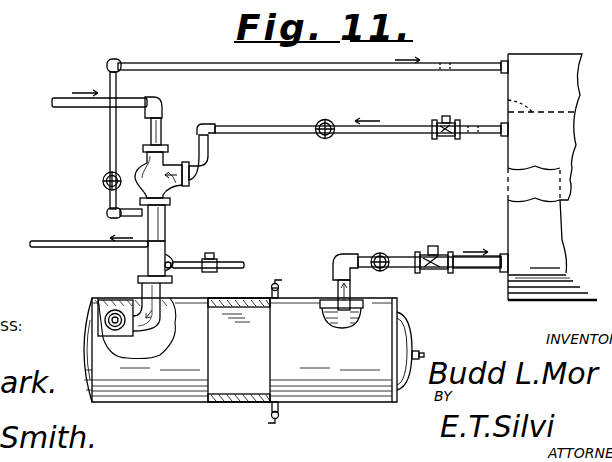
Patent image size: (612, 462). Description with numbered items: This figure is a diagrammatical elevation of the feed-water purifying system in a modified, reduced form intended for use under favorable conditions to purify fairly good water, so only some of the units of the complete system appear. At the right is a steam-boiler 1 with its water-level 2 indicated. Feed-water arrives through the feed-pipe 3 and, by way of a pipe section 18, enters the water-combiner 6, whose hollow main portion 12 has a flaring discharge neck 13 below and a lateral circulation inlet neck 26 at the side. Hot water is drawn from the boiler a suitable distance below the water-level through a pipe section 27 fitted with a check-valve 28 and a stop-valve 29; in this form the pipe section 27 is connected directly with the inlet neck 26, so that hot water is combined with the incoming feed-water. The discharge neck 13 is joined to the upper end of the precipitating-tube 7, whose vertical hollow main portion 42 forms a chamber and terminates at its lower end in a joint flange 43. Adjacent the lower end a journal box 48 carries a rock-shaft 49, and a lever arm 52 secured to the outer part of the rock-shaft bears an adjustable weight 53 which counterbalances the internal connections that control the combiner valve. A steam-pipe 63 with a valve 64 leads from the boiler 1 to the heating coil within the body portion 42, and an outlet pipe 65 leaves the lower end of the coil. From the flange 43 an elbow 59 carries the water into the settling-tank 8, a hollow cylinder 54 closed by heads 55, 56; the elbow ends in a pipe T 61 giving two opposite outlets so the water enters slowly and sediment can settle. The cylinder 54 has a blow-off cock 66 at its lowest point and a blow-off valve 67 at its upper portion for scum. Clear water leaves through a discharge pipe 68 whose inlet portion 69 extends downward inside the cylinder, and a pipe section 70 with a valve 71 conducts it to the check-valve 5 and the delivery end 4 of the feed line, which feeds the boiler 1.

The steam-boiler 1 is at (522, 210).
The water-level 2 is at (508, 100).
The feed-pipe 3 is at (62, 97).
The delivery end of the feed line 4 is at (500, 270).
The check-valve 5 is at (428, 272).
The water-combiner 6 is at (175, 184).
The precipitating-tube 7 is at (175, 231).
The settling-tank 8 is at (115, 290).
The hollow main portion 12 is at (152, 172).
The flaring discharge neck 13 is at (178, 203).
The pipe section 18 is at (160, 143).
The lateral circulation inlet neck 26 is at (185, 161).
The pipe section 27 is at (209, 156).
The check-valve 28 is at (440, 140).
The stop-valve 29 is at (325, 119).
The hollow main portion 42 is at (146, 233).
The joint flange 43 is at (139, 277).
The journal box 48 is at (172, 262).
The rock-shaft 49 is at (147, 263).
The lever arm 52 is at (234, 262).
The weight 53 is at (210, 272).
The hollow cylinder 54 is at (214, 403).
The head 55 is at (84, 362).
The head 56 is at (399, 325).
The elbow 59 is at (135, 321).
The pipe T 61 is at (98, 325).
The steam-pipe 63 is at (109, 162).
The valve 64 is at (103, 182).
The outlet pipe 65 is at (89, 232).
The blow-off cock 66 is at (275, 425).
The blow-off valve 67 is at (268, 288).
The discharge pipe 68 is at (338, 287).
The inlet portion 69 is at (342, 318).
The pipe section 70 is at (390, 257).
The valve 71 is at (380, 271).